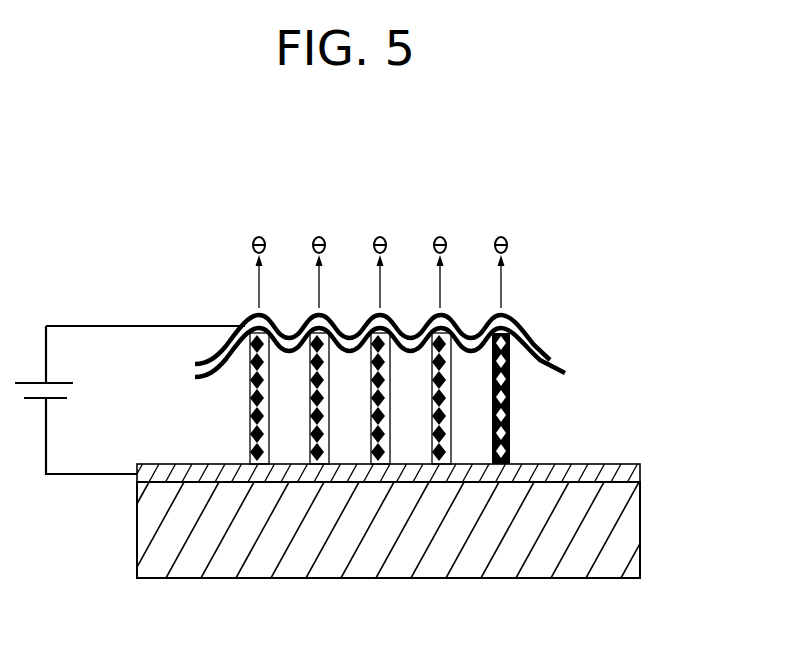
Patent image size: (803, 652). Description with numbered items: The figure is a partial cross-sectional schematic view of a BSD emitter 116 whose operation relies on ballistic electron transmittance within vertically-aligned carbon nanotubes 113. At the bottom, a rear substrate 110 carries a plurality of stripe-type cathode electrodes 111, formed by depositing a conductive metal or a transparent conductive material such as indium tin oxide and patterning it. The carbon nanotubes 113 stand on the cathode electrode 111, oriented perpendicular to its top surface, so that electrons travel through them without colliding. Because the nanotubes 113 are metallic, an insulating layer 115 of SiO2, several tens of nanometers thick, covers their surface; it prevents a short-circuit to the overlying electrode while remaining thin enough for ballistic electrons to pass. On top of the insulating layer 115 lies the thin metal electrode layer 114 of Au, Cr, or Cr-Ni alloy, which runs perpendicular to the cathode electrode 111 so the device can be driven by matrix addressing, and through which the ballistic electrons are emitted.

The rear substrate 110 is at (615, 537).
The cathode electrode 111 is at (622, 473).
The carbon nanotubes 113 is at (513, 440).
The thin metal electrode layer 114 is at (532, 323).
The insulating layer 115 is at (550, 357).
The BSD emitter 116 is at (472, 173).